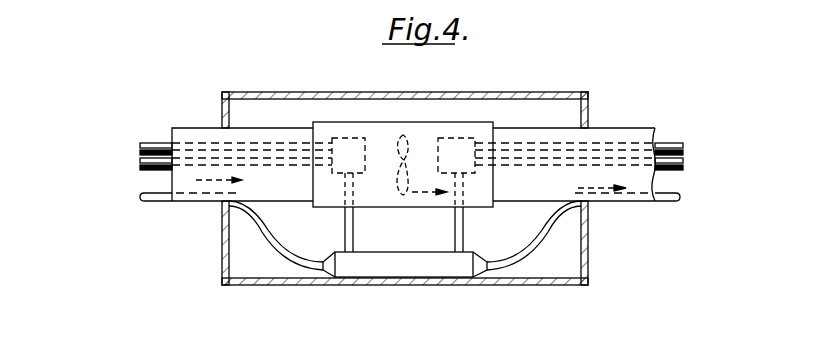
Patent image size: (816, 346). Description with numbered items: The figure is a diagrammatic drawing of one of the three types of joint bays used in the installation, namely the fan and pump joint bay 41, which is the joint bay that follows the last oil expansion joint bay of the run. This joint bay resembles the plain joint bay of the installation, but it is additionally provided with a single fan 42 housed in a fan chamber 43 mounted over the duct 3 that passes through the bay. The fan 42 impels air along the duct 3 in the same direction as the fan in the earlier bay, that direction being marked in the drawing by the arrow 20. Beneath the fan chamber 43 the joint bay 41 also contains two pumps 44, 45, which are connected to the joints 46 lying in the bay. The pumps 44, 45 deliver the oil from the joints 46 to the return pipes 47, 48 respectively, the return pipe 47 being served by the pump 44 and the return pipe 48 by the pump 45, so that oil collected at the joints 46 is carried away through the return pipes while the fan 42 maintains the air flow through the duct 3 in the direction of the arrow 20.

The duct 3 is at (196, 127).
The arrow 20 is at (429, 179).
The fan and pump joint bay 41 is at (300, 292).
The fan 42 is at (410, 143).
The fan chamber 43 is at (494, 122).
The pump 44 is at (352, 153).
The pump 45 is at (462, 150).
The joints 46 is at (402, 262).
The return pipe 47 is at (140, 146).
The return pipe 48 is at (683, 146).